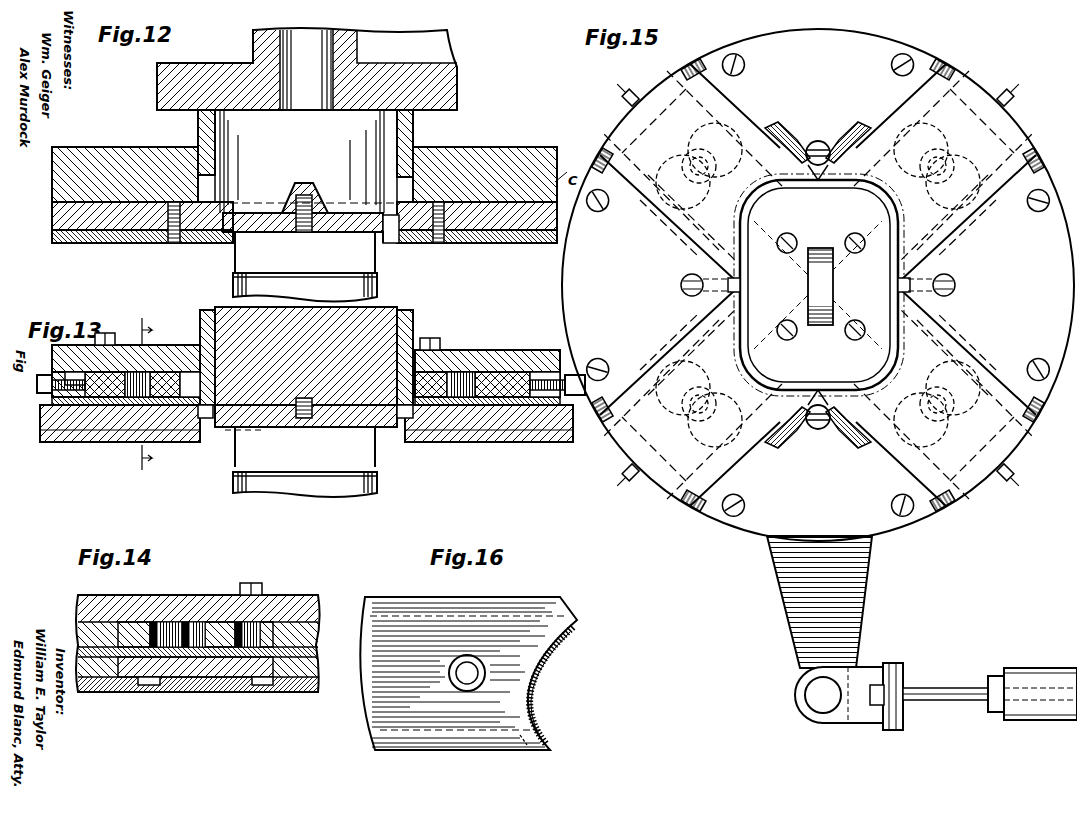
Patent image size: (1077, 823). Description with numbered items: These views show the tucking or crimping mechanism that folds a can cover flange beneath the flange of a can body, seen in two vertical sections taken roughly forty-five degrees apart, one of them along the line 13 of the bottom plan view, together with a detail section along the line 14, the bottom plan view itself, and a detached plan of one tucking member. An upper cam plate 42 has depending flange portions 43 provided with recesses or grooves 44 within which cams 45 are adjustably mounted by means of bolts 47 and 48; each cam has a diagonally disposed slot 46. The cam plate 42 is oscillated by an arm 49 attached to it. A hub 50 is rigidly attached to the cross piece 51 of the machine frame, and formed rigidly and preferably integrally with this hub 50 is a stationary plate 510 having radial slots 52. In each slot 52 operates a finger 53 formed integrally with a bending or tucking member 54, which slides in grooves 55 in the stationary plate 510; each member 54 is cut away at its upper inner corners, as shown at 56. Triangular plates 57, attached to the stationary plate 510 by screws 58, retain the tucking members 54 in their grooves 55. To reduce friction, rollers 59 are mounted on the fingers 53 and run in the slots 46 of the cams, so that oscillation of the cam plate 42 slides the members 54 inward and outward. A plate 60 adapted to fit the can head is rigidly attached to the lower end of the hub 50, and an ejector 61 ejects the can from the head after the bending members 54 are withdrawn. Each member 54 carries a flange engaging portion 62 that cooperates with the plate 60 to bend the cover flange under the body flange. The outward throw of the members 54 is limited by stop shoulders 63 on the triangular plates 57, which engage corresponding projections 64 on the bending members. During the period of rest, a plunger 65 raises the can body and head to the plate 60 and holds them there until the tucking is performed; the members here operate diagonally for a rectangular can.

In FIG. 15, the section line 13— 13 is at (626, 86).
In FIG. 13, the section line 14— 14 is at (141, 393).
In FIG. 12, the cam plate 42 is at (497, 158).
In FIG. 13, the cam plate 42 is at (500, 350).
In FIG. 14, the cam plate 42 is at (318, 597).
In FIG. 13, the depending flange portions 43 is at (52, 400).
In FIG. 14, the depending flange portions 43 is at (198, 652).
In FIG. 13, the recesses or grooves 44 is at (77, 372).
In FIG. 14, the recesses or grooves 44 is at (290, 622).
In FIG. 13, the cams 45 is at (186, 372).
In FIG. 14, the cams 45 is at (158, 622).
In FIG. 14, the diagonally disposed slot 46 is at (190, 622).
In FIG. 15, the diagonally disposed slot 46 is at (686, 206).
In FIG. 13, the bolt 47 is at (107, 333).
In FIG. 14, the bolt 47 is at (258, 583).
In FIG. 15, the bolt 47 is at (930, 96).
In FIG. 13, the bolt 48 is at (42, 376).
In FIG. 15, the bolt 48 is at (1012, 90).
In FIG. 15, the arm 49 is at (858, 626).
In FIG. 12, the hub 50 is at (302, 121).
In FIG. 13, the hub 50 is at (400, 307).
In FIG. 12, the cross piece 51 is at (458, 92).
In FIG. 13, the radial slots 52 is at (115, 405).
In FIG. 14, the radial slots 52 is at (170, 678).
In FIG. 15, the radial slots 52 is at (698, 150).
In FIG. 13, the finger 53 is at (140, 372).
In FIG. 14, the finger 53 is at (205, 678).
In FIG. 16, the finger 53 is at (461, 680).
In FIG. 15, the finger 53 is at (950, 405).
In FIG. 13, the bending or tucking member 54 is at (60, 443).
In FIG. 14, the bending or tucking member 54 is at (195, 678).
In FIG. 16, the bending or tucking member 54 is at (435, 752).
In FIG. 15, the bending or tucking member 54 is at (618, 118).
In FIG. 14, the grooves 55 is at (145, 686).
In FIG. 12, the cut-away corner 56 is at (396, 229).
In FIG. 13, the cut-away corner 56 is at (200, 430).
In FIG. 16, the cut-away corner 56 is at (545, 640).
In FIG. 12, the triangular plate 57 is at (86, 244).
In FIG. 14, the triangular plate 57 is at (82, 693).
In FIG. 15, the triangular plate 57 is at (818, 285).
In FIG. 12, the screws 58 is at (175, 244).
In FIG. 15, the screws 58 is at (612, 208).
In FIG. 13, the roller 59 is at (165, 400).
In FIG. 14, the roller 59 is at (222, 622).
In FIG. 16, the roller 59 is at (486, 668).
In FIG. 15, the roller 59 is at (716, 166).
In FIG. 12, the plate 60 is at (265, 210).
In FIG. 13, the plate 60 is at (305, 421).
In FIG. 15, the plate 60 is at (819, 285).
In FIG. 12, the ejector 61 is at (302, 232).
In FIG. 13, the ejector 61 is at (305, 447).
In FIG. 15, the ejector 61 is at (834, 287).
In FIG. 12, the flange engaging portion 62 is at (380, 243).
In FIG. 13, the flange engaging portion 62 is at (205, 442).
In FIG. 16, the flange engaging portion 62 is at (576, 624).
In FIG. 15, the flange engaging portion 62 is at (738, 305).
In FIG. 15, the stop shoulder 63 is at (795, 130).
In FIG. 16, the projection 64 is at (528, 748).
In FIG. 15, the projection 64 is at (818, 289).
In FIG. 12, the plunger 65 is at (378, 283).
In FIG. 13, the plunger 65 is at (380, 485).
In FIG. 12, the stationary plate 510 is at (52, 210).
In FIG. 13, the stationary plate 510 is at (40, 420).
In FIG. 14, the stationary plate 510 is at (318, 660).